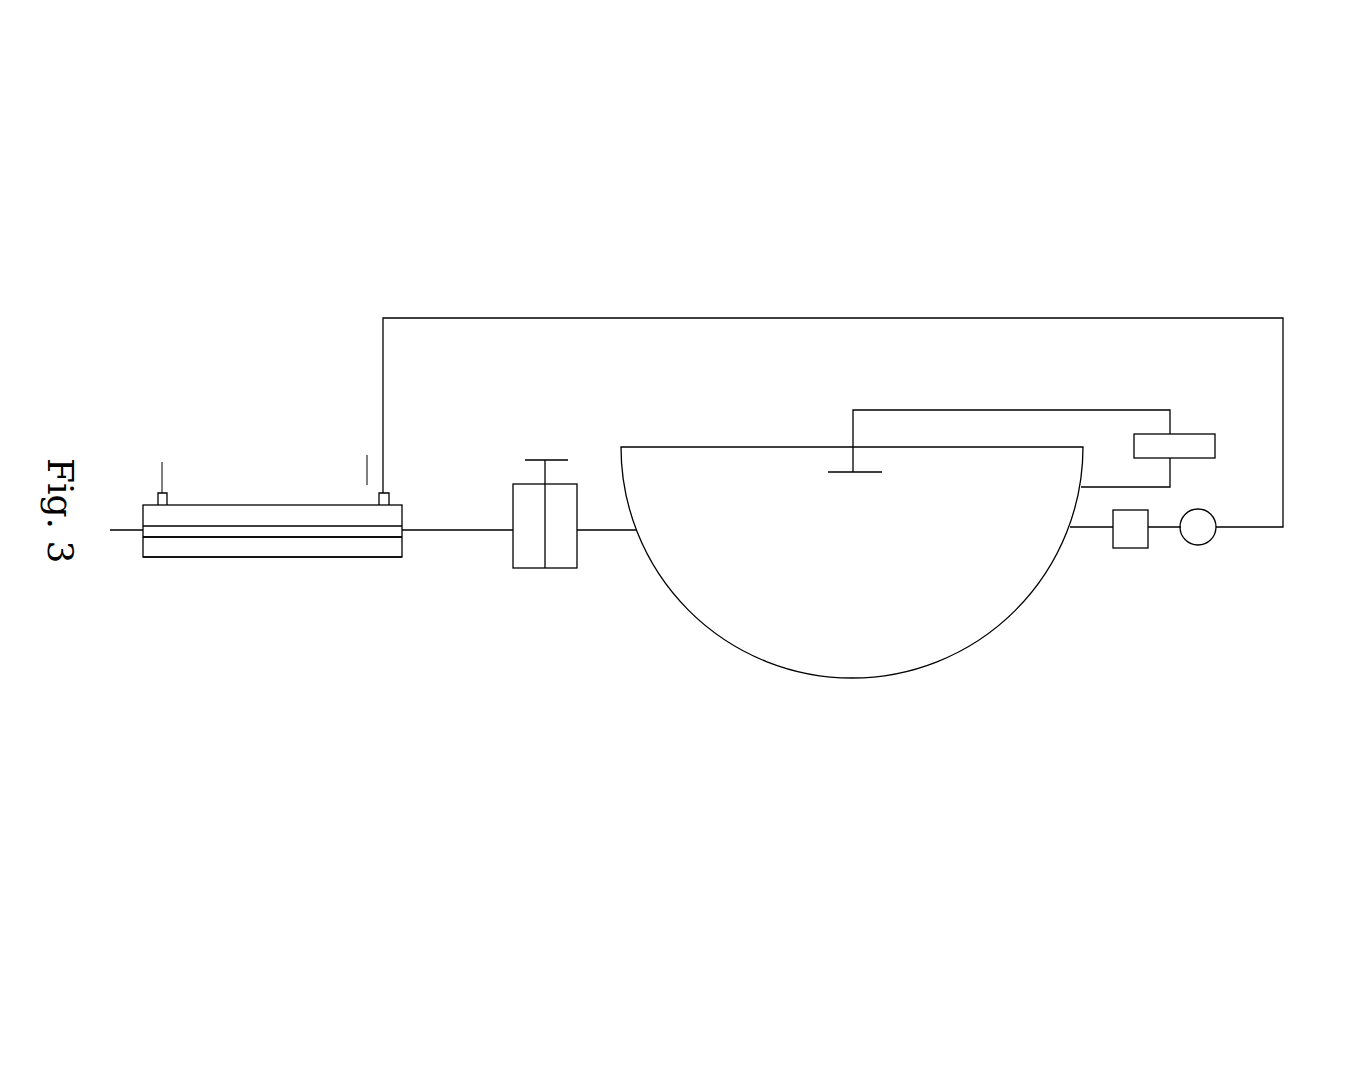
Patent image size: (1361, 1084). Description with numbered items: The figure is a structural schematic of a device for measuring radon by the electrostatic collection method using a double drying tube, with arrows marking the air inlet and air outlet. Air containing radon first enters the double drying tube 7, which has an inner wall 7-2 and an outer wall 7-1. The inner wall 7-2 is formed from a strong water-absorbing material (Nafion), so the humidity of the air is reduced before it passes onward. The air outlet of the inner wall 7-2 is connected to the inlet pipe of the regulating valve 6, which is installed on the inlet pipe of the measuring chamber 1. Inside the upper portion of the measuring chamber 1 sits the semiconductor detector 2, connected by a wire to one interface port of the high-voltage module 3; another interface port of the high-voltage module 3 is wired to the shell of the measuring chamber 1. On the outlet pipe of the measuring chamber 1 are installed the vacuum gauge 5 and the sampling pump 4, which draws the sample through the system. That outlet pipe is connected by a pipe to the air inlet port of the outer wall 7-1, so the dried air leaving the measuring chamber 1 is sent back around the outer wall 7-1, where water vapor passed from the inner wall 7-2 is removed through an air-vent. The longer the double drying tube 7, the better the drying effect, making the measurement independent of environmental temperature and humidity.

The measuring chamber 1 is at (977, 608).
The semiconductor detector 2 is at (837, 472).
The high-voltage module 3 is at (1180, 434).
The sampling pump 4 is at (1215, 537).
The vacuum gauge 5 is at (1135, 548).
The regulating valve 6 is at (527, 572).
The double drying tube 7 is at (315, 513).
The outer wall 7-1 is at (200, 557).
The inner wall 7-2 is at (275, 537).